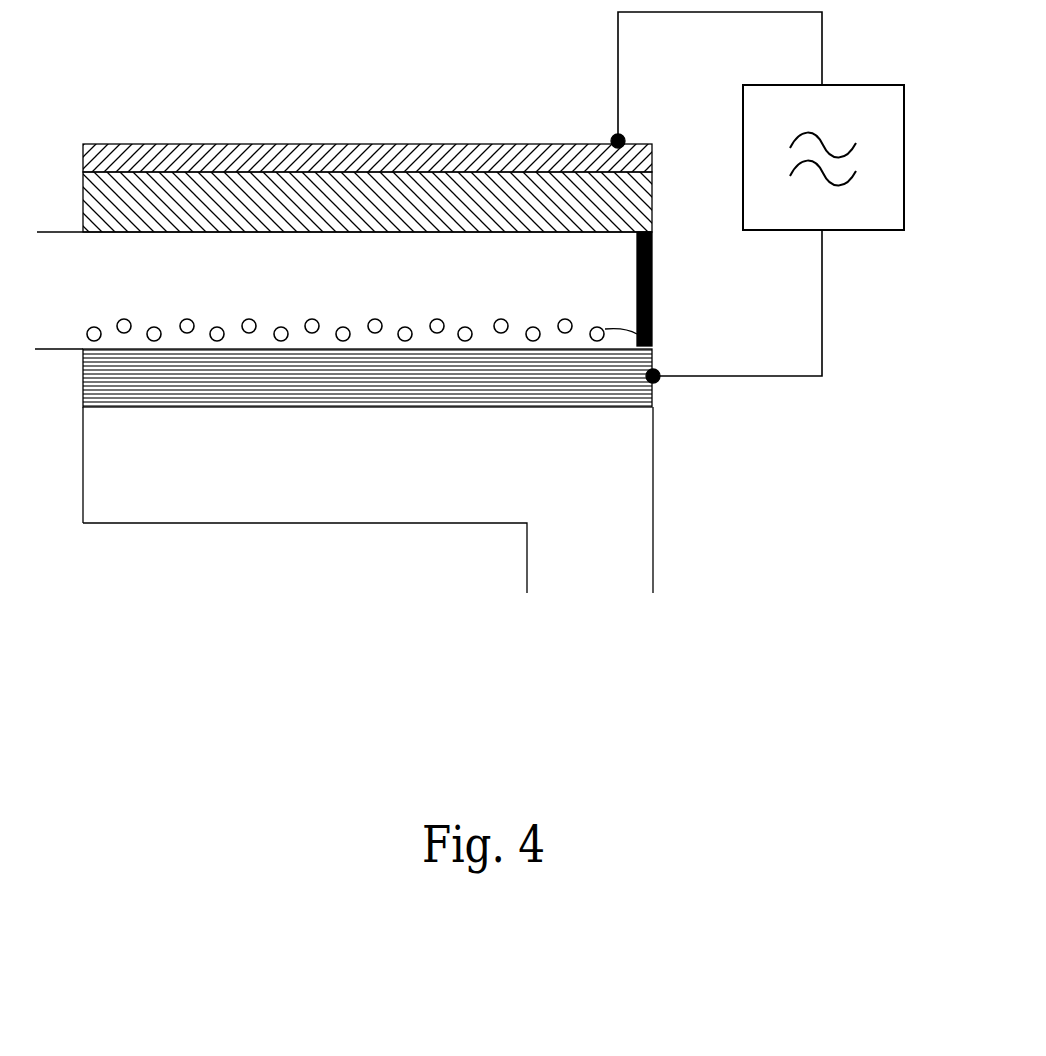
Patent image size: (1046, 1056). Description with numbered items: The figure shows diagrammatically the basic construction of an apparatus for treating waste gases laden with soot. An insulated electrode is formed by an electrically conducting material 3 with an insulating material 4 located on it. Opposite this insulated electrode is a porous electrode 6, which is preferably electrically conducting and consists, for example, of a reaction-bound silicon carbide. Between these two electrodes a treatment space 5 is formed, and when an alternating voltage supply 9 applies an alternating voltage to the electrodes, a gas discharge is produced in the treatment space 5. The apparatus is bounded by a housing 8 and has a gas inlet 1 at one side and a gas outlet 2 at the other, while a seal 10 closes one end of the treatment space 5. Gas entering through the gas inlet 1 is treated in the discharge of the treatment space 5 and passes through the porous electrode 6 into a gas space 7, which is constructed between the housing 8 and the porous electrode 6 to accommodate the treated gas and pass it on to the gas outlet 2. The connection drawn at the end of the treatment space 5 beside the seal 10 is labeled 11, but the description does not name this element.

The gas inlet 1 is at (57, 290).
The gas outlet 2 is at (617, 509).
The electrically conducting material 3 is at (197, 161).
The insulating material 4 is at (250, 203).
The treatment space 5 is at (302, 260).
The porous electrode 6 is at (238, 363).
The gas space 7 is at (345, 465).
The housing 8 is at (395, 528).
The alternating voltage supply 9 is at (880, 203).
The seal 10 is at (652, 307).
The particle chain connection 11 is at (652, 345).